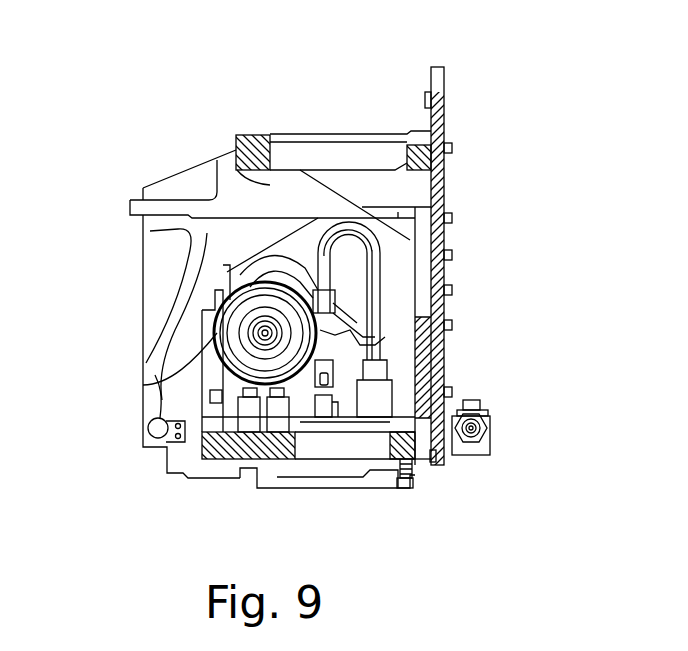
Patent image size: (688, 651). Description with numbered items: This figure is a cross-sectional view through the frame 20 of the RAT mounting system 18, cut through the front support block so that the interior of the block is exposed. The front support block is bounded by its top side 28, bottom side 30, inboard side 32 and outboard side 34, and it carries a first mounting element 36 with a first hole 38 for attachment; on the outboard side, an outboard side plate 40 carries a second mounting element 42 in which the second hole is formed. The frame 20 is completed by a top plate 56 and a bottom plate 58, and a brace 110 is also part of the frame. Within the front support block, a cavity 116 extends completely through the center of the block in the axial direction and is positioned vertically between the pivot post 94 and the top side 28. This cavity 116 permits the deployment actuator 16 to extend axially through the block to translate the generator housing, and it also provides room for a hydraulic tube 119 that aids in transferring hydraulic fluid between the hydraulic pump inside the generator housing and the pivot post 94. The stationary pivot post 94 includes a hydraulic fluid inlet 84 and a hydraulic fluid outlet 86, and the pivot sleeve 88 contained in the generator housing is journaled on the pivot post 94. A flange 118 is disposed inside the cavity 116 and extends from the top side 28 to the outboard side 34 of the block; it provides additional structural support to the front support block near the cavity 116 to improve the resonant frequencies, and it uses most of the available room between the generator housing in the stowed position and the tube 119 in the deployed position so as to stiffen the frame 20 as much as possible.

The RAT mounting system 18 is at (145, 92).
The frame 20 is at (110, 297).
The second mounting element 42 is at (438, 74).
The outboard side 34 is at (415, 253).
The outboard side plate 40 is at (447, 174).
The top plate 56 is at (297, 137).
The top side 28 is at (238, 180).
The first hole 38 is at (172, 197).
The first mounting element 36 is at (130, 203).
The inboard side 32 is at (142, 395).
The deployment actuator 16 is at (146, 364).
The cavity 116 is at (277, 270).
The flange 118 is at (323, 228).
The hydraulic tube 119 is at (373, 315).
The pivot sleeve 88 is at (310, 425).
The bottom plate 58 is at (352, 458).
The bottom side 30 is at (155, 448).
The brace 110 is at (422, 457).
The pivot post 94 is at (438, 452).
The hydraulic fluid inlet 84 is at (473, 398).
The hydraulic fluid outlet 86 is at (488, 420).